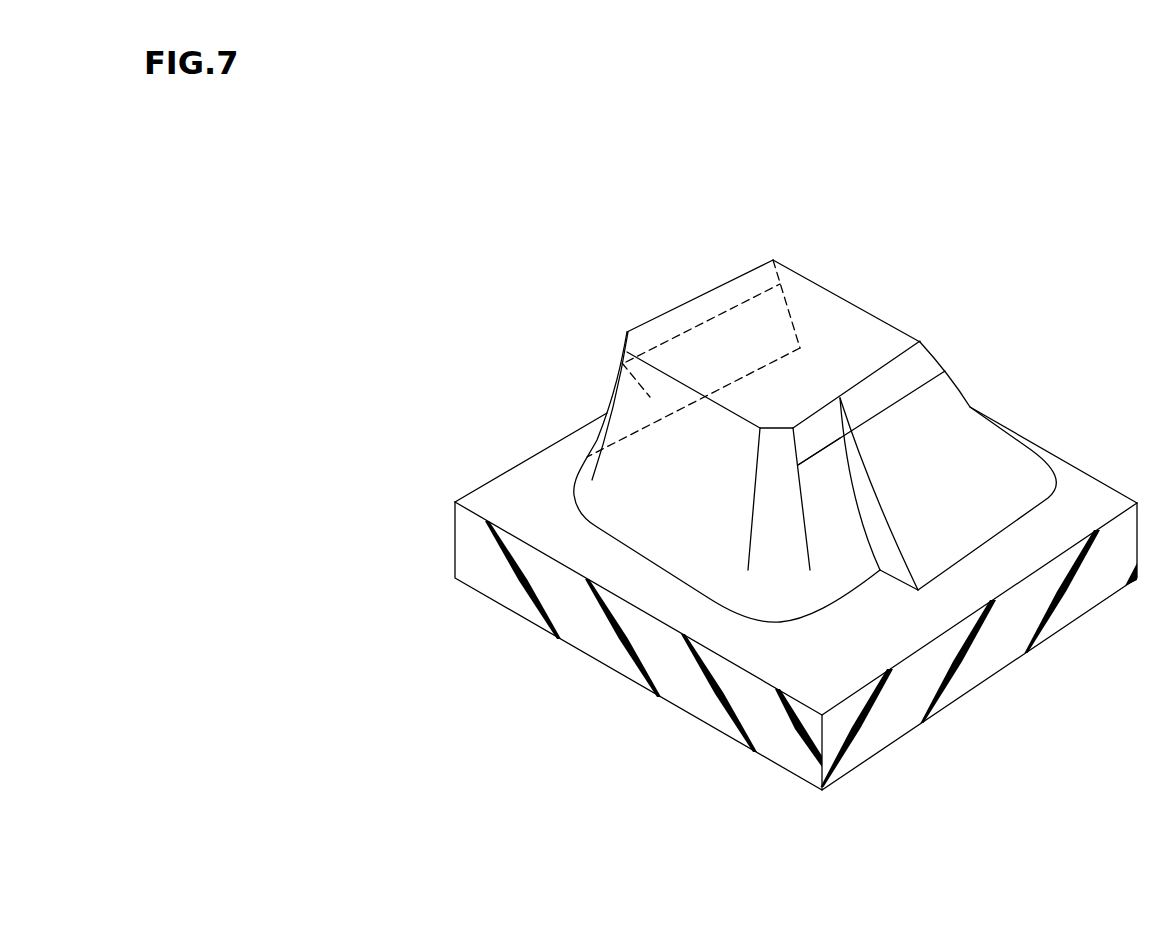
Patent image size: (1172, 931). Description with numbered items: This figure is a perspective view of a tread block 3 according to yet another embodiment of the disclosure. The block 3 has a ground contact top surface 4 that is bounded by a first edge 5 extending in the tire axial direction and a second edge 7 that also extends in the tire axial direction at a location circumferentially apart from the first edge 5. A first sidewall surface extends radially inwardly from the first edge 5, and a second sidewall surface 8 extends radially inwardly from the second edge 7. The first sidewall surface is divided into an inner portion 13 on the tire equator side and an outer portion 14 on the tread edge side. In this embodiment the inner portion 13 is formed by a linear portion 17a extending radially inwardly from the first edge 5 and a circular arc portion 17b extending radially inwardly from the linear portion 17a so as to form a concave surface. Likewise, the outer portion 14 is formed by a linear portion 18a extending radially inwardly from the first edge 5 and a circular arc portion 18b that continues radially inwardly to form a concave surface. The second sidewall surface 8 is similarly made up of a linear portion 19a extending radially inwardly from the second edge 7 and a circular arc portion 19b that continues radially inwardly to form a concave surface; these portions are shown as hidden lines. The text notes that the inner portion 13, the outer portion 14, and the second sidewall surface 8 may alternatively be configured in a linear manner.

The block 3 is at (817, 320).
The ground contact top surface 4 is at (795, 290).
The first edge 5 is at (887, 362).
The second edge 7 is at (738, 273).
The second sidewall surface 8 is at (679, 313).
The inner portion 13 is at (977, 446).
The outer portion 14 is at (696, 630).
The linear portion 17a is at (912, 372).
The circular arc portion 17b is at (967, 477).
The linear portion 18a is at (820, 430).
The circular arc portion 18b is at (837, 530).
The linear portion 19a is at (707, 314).
The circular arc portion 19b is at (622, 363).